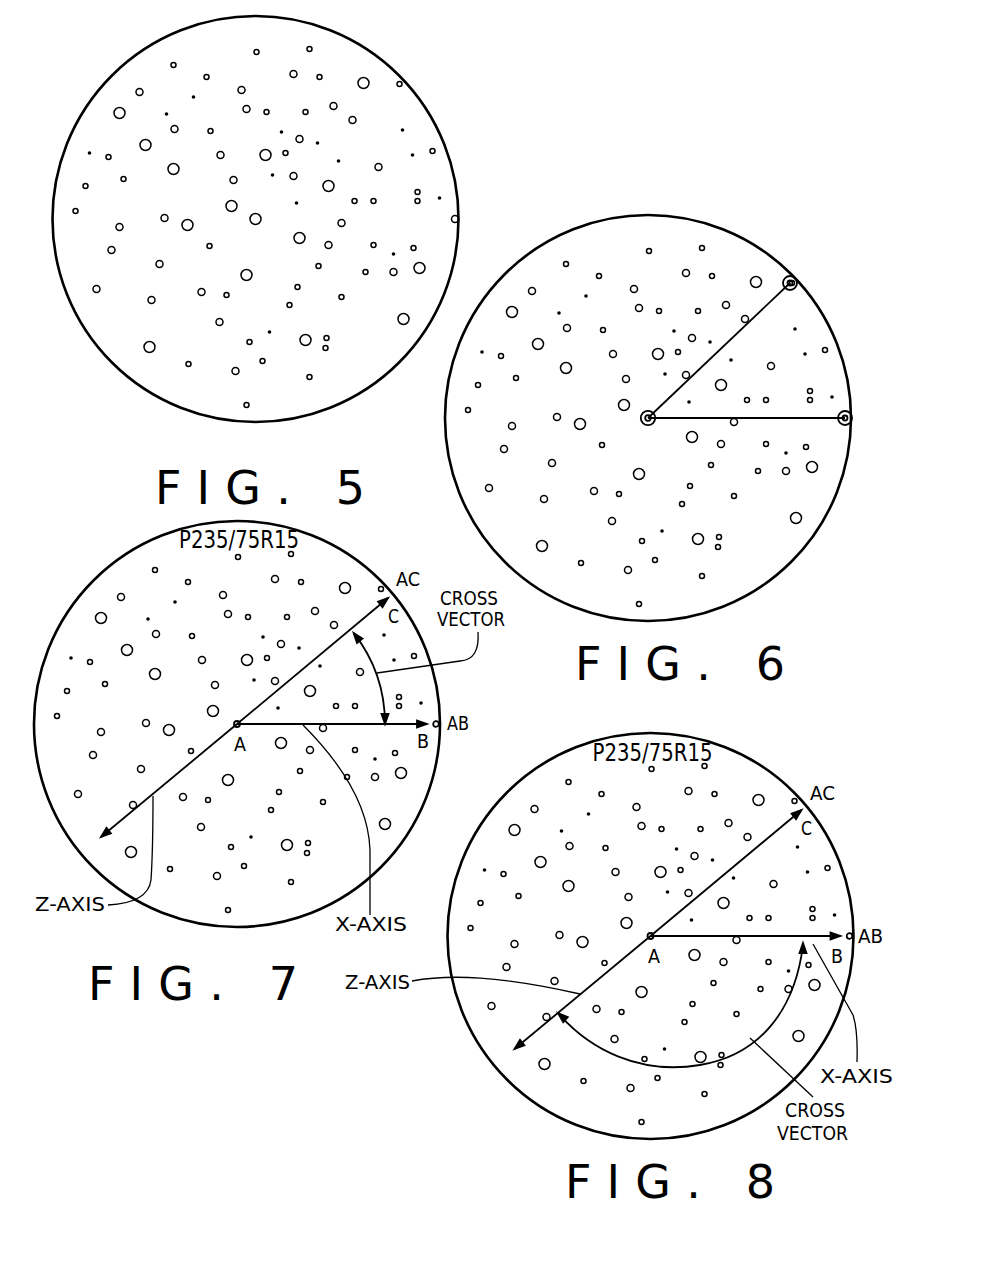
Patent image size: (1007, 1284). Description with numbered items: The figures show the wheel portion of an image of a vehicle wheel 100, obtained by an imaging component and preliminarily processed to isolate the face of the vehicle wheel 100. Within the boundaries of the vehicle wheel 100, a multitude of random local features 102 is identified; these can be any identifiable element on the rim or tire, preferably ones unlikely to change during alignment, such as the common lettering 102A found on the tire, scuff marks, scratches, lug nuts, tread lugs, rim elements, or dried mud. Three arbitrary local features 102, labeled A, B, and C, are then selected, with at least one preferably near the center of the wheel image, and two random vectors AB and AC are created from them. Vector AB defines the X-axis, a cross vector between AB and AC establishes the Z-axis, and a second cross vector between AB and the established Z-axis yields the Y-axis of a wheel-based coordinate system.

In FIG. 5, the vehicle wheel 100 is at (55, 150).
In FIG. 6, the vehicle wheel 100 is at (567, 229).
In FIG. 7, the vehicle wheel 100 is at (334, 542).
In FIG. 8, the vehicle wheel 100 is at (777, 776).
In FIG. 5, the random local features 102 is at (117, 110).
In FIG. 6, the random local features 102 is at (797, 280).
In FIG. 5, the common lettering 102A is at (320, 36).
In FIG. 6, the common lettering 102A is at (720, 235).